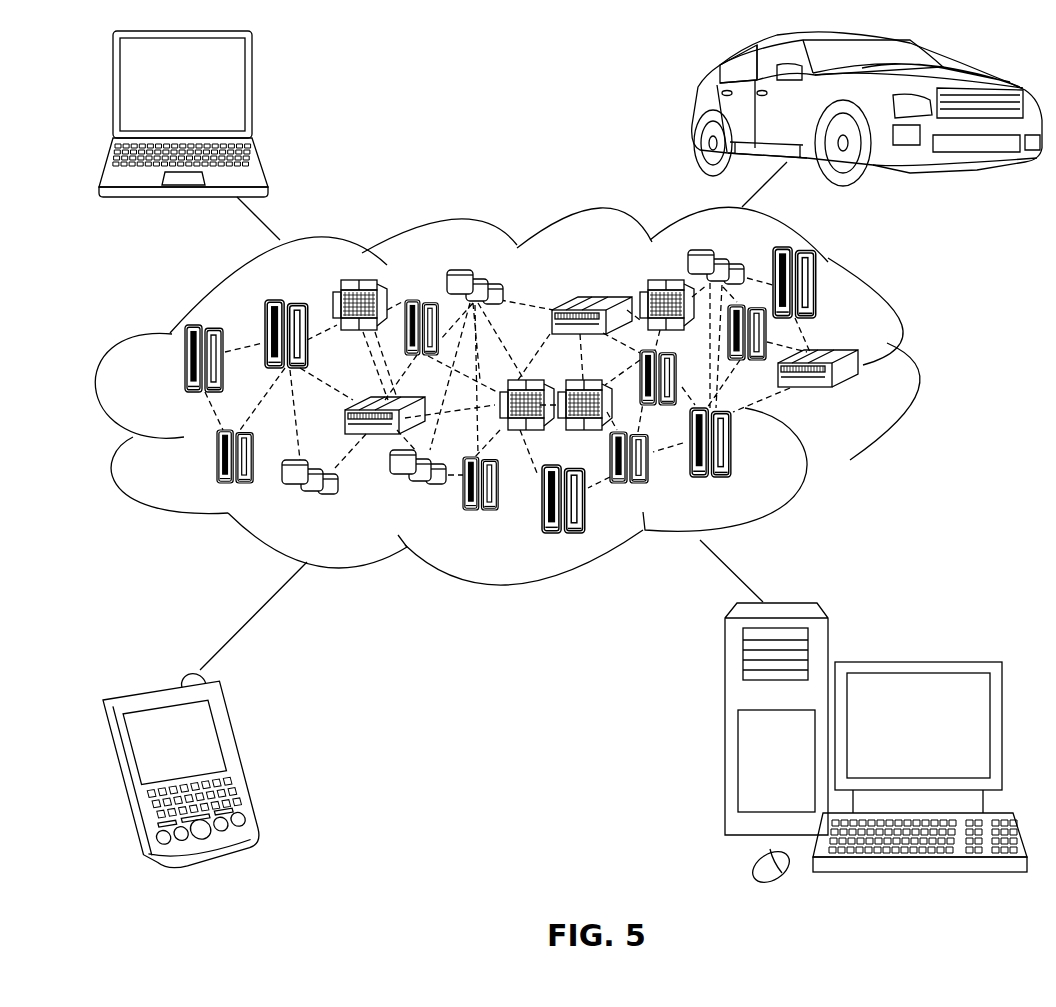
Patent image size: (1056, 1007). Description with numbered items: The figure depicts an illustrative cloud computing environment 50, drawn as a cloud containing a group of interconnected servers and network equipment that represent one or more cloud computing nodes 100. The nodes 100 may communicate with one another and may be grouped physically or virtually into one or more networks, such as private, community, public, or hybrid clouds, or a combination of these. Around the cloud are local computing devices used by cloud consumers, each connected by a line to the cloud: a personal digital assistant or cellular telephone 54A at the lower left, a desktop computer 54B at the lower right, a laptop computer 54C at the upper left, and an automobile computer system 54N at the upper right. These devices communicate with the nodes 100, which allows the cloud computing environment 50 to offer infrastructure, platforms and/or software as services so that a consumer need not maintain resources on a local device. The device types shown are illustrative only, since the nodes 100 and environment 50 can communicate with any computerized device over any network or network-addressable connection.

The cloud computing environment 50 is at (915, 372).
The cloud computing nodes 100 is at (866, 402).
The personal digital assistant or cellular telephone 54A is at (240, 758).
The desktop computer 54B is at (915, 660).
The laptop computer 54C is at (252, 93).
The automobile computer system 54N is at (697, 109).